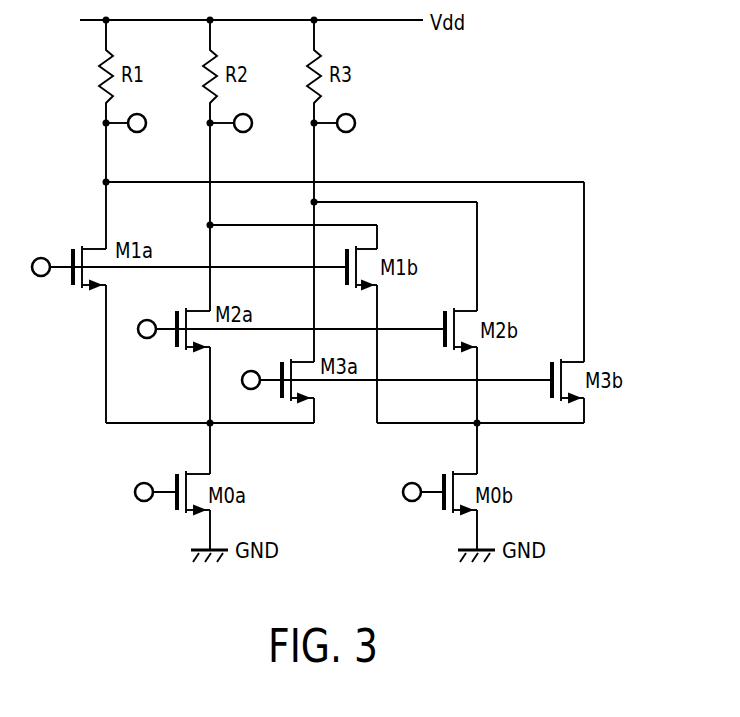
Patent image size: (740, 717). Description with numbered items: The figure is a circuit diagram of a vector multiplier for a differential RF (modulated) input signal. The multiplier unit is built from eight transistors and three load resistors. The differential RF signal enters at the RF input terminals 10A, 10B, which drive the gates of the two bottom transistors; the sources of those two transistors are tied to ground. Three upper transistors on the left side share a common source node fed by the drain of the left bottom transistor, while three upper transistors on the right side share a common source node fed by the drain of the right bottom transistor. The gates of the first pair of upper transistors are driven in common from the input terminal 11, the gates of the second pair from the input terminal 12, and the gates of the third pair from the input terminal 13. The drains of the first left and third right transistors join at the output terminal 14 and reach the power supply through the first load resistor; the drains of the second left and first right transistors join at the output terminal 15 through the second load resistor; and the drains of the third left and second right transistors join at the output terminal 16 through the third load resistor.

The RF input terminal 10A is at (143, 502).
The RF input terminal 10B is at (411, 502).
The input terminal 11 is at (40, 277).
The input terminal 12 is at (146, 339).
The input terminal 13 is at (255, 371).
The output terminal 14 is at (146, 123).
The output terminal 15 is at (252, 123).
The output terminal 16 is at (355, 123).